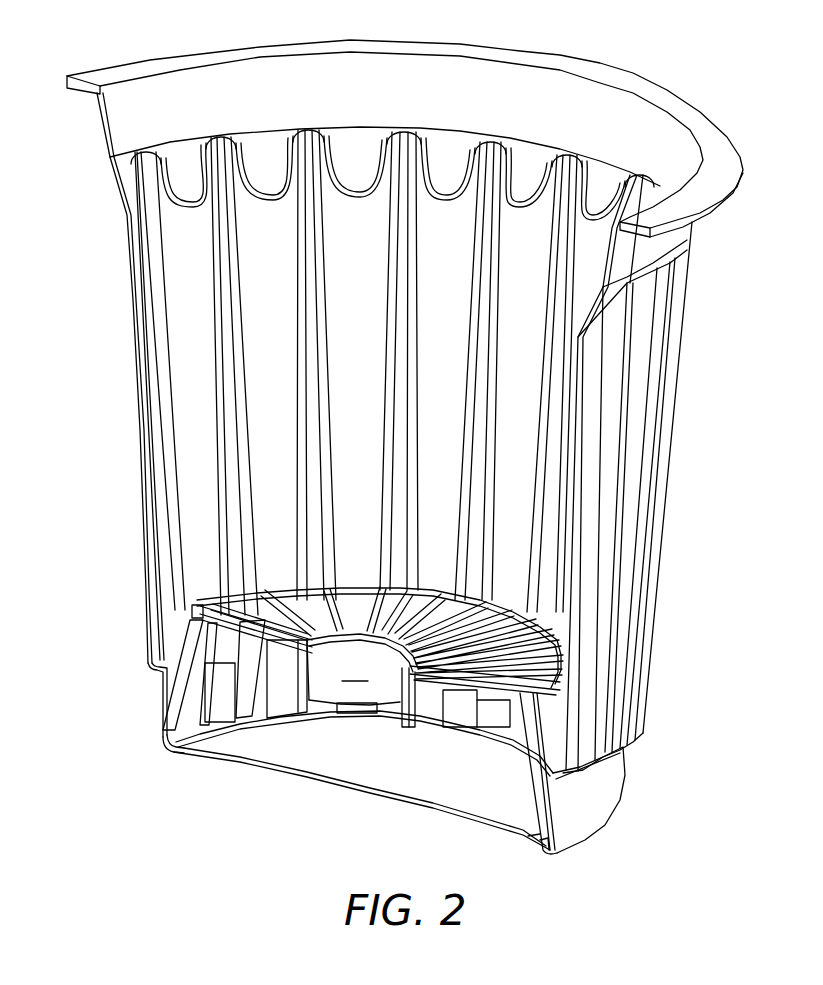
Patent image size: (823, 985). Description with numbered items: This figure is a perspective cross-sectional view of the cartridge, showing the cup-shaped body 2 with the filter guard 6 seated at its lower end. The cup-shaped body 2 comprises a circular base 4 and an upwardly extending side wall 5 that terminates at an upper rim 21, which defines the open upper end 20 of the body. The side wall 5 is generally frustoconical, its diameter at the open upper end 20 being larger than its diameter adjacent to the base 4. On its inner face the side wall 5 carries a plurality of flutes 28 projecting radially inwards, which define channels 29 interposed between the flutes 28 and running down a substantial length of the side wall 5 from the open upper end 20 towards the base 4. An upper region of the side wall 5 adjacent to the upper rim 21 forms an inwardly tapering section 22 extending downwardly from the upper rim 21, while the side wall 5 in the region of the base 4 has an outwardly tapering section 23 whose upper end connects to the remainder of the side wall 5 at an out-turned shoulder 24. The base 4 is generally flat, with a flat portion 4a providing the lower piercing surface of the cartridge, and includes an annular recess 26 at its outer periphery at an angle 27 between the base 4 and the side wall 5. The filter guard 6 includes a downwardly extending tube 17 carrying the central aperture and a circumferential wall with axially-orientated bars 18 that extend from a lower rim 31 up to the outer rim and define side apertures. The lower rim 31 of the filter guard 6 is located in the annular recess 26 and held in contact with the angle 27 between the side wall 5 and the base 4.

The cup-shaped body 2 is at (670, 560).
The base 4 is at (355, 775).
The flat portion 4a is at (415, 815).
The side wall 5 is at (632, 426).
The filter guard 6 is at (250, 712).
The downwardly extending tube 17 is at (362, 680).
The axially-orientated bars 18 is at (465, 712).
The open upper end 20 is at (226, 92).
The upper rim 21 is at (710, 200).
The inwardly tapering section 22 is at (96, 168).
The outwardly tapering section 23 is at (622, 832).
The out-turned shoulder 24 is at (152, 672).
The annular recess 26 is at (156, 752).
The angle 27 is at (558, 855).
The flutes 28 is at (197, 322).
The channels 29 is at (218, 258).
The lower rim 31 is at (546, 851).